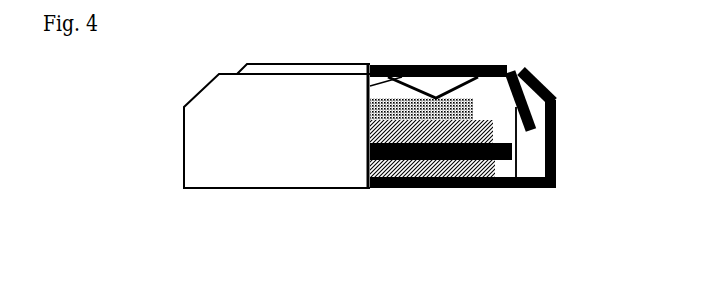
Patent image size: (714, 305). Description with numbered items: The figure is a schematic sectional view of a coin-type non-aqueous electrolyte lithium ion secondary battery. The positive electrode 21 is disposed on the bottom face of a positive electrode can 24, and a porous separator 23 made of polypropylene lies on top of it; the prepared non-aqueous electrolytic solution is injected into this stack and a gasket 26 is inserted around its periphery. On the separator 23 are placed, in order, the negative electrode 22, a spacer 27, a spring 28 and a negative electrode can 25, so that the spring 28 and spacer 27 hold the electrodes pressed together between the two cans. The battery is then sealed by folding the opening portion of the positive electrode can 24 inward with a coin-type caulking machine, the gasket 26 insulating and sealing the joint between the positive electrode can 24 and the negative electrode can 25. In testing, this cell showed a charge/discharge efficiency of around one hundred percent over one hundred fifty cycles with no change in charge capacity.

The positive electrode 21 is at (363, 168).
The negative electrode 22 is at (363, 130).
The porous separator 23 is at (363, 152).
The positive electrode can 24 is at (403, 195).
The negative electrode can 25 is at (483, 58).
The gasket 26 is at (529, 168).
The spacer 27 is at (363, 110).
The spring 28 is at (442, 82).